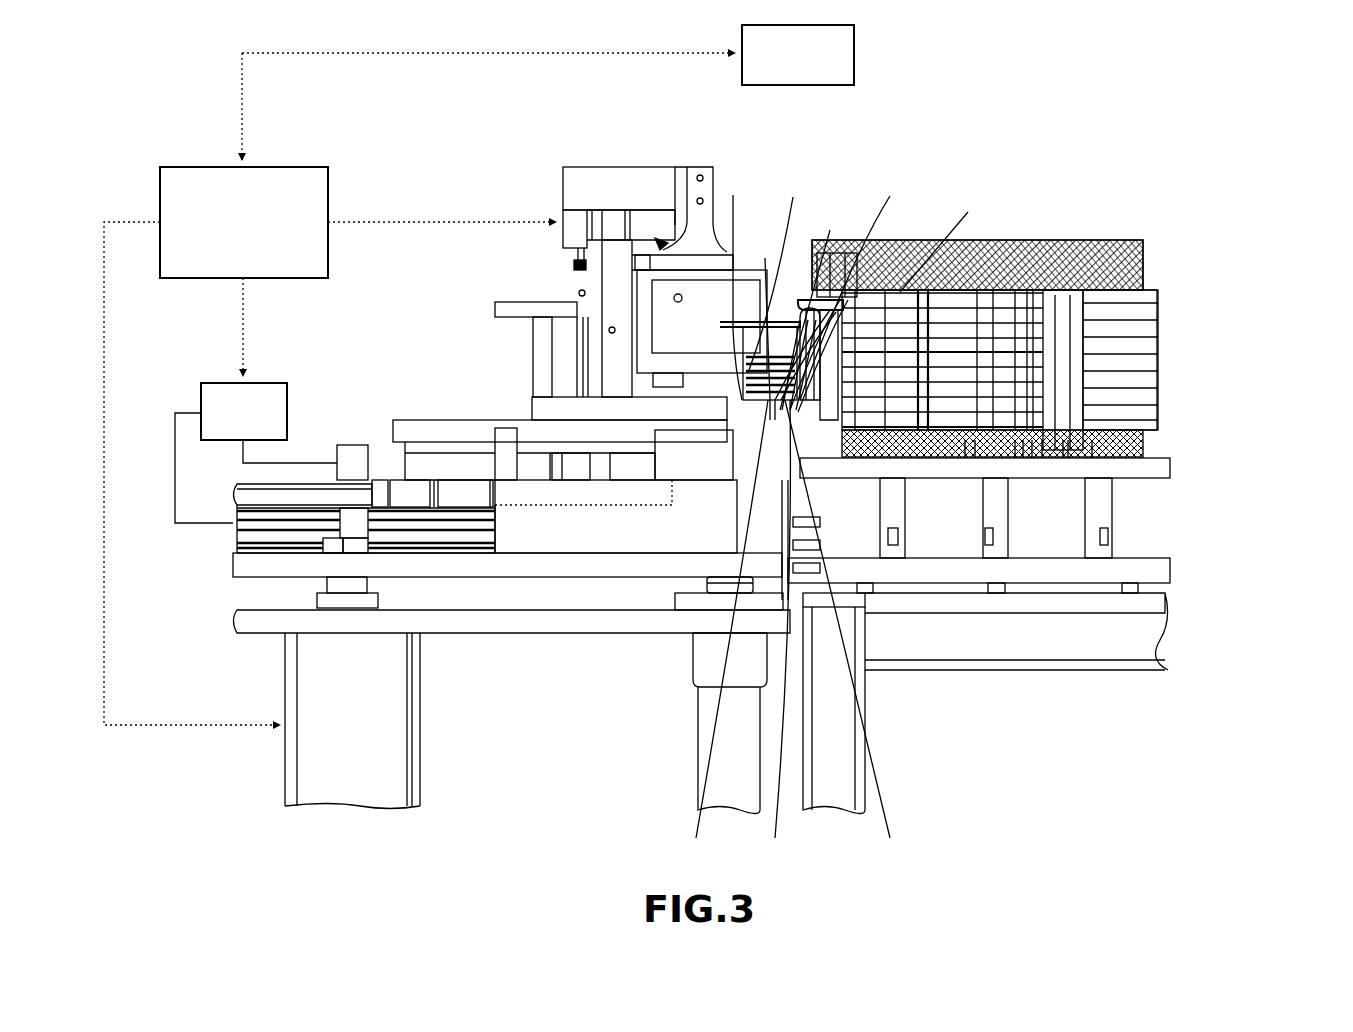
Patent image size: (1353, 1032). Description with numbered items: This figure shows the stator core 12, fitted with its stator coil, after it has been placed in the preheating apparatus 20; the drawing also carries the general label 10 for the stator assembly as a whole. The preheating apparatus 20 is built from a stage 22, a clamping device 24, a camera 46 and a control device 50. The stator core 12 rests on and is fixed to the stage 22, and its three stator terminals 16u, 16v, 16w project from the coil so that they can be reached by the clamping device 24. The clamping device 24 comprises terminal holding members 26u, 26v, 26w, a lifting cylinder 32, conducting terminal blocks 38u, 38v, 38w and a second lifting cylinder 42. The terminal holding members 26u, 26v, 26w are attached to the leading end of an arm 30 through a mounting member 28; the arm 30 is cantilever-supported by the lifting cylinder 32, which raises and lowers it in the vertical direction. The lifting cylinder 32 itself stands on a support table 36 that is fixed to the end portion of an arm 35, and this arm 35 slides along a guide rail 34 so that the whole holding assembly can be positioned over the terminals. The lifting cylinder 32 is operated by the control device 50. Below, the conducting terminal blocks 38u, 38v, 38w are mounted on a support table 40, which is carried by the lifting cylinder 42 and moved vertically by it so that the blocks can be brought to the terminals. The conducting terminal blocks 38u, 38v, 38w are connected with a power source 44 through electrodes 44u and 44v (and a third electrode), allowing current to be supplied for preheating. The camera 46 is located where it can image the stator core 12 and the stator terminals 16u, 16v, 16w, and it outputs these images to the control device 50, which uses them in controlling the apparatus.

The stator 10 is at (1112, 216).
The stator core 12 is at (1158, 365).
The stator terminal 16u is at (788, 316).
The stator terminal 16v is at (813, 306).
The stator terminal 16w is at (893, 299).
The preheating apparatus 20 is at (1078, 82).
The stage 22 is at (1170, 468).
The clamping device 24 is at (812, 136).
The terminal holding member 26u is at (760, 286).
The terminal holding member 26v is at (784, 286).
The terminal holding member 26w is at (856, 296).
The mounting member 28 is at (702, 165).
The arm 30 is at (608, 180).
The lifting cylinder 32 is at (556, 218).
The guide rail 34 is at (233, 540).
The arm 35 is at (233, 495).
The support table 36 is at (440, 418).
The conducting terminal block 38u is at (727, 632).
The conducting terminal block 38v is at (771, 632).
The conducting terminal block 38w is at (854, 632).
The support table 40 is at (603, 592).
The lifting cylinder 42 is at (318, 776).
The power source 44 is at (203, 385).
The electrode 44u is at (350, 455).
The electrode 44v is at (352, 520).
The camera 46 is at (854, 54).
The control device 50 is at (192, 168).